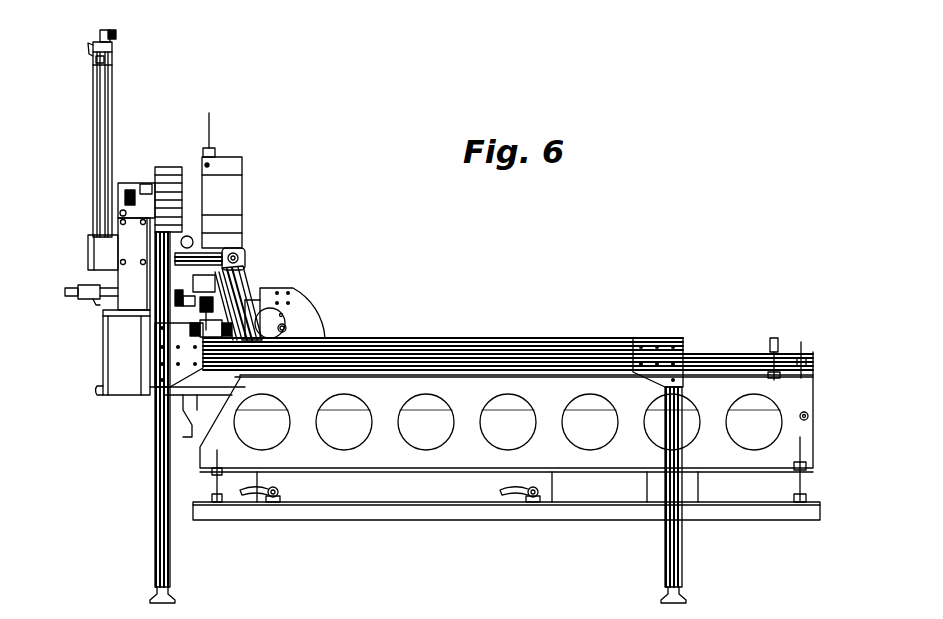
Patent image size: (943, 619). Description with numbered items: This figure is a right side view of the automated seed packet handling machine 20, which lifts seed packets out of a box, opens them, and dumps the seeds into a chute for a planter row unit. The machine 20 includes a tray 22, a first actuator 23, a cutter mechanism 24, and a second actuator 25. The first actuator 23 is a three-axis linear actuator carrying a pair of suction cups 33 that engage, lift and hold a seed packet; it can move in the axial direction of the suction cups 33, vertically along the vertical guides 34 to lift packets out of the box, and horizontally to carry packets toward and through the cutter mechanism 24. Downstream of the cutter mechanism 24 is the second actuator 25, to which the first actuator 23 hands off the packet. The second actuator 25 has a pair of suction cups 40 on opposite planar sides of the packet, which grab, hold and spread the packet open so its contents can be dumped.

The automated seed packet handling machine 20 is at (648, 206).
The tray 22 is at (410, 463).
The first actuator 23 is at (132, 388).
The cutter mechanism 24 is at (232, 168).
The second actuator 25 is at (286, 326).
The suction cups 33 is at (213, 300).
The vertical guides 34 is at (105, 108).
The suction cups 40 is at (223, 320).